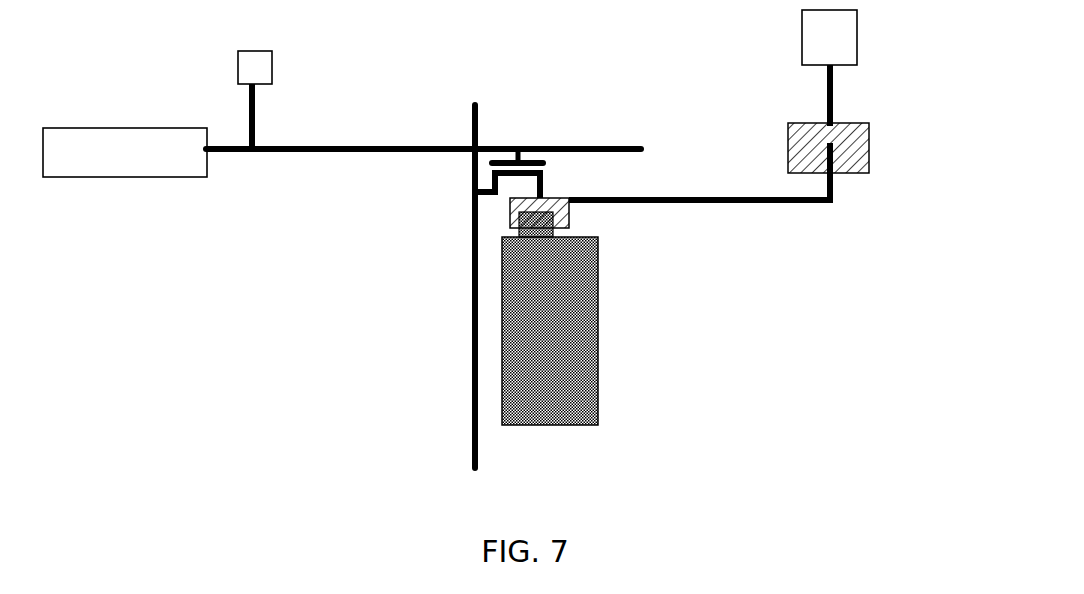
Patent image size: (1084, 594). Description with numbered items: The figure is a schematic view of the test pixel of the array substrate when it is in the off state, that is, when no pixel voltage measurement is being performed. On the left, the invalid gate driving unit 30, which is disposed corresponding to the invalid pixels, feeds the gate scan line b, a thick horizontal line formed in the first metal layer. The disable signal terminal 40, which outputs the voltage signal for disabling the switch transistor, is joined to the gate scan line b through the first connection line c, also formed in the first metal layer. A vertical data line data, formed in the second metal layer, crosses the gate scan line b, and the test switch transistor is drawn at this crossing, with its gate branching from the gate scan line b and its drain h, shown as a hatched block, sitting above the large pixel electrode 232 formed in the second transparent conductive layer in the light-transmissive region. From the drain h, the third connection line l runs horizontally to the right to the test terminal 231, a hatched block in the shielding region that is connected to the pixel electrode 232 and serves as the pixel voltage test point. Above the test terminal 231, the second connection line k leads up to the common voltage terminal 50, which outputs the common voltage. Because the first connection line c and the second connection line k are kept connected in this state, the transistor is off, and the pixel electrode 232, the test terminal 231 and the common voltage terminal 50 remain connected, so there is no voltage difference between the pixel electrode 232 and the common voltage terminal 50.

The invalid gate driving unit 30 is at (125, 152).
The disable signal terminal 40 is at (255, 67).
The common voltage terminal 50 is at (829, 37).
The test terminal 231 is at (869, 165).
The pixel electrode 232 is at (556, 425).
The gate scan line b is at (357, 152).
The first connection line c is at (250, 143).
The drain h is at (510, 205).
The second connection line k is at (833, 105).
The third connection line l is at (678, 198).
The data line data is at (475, 303).